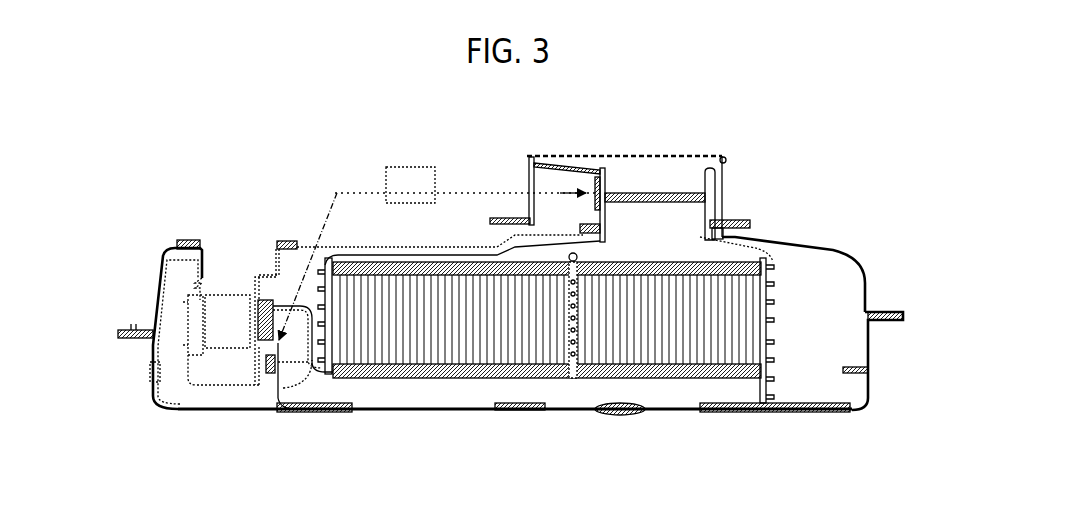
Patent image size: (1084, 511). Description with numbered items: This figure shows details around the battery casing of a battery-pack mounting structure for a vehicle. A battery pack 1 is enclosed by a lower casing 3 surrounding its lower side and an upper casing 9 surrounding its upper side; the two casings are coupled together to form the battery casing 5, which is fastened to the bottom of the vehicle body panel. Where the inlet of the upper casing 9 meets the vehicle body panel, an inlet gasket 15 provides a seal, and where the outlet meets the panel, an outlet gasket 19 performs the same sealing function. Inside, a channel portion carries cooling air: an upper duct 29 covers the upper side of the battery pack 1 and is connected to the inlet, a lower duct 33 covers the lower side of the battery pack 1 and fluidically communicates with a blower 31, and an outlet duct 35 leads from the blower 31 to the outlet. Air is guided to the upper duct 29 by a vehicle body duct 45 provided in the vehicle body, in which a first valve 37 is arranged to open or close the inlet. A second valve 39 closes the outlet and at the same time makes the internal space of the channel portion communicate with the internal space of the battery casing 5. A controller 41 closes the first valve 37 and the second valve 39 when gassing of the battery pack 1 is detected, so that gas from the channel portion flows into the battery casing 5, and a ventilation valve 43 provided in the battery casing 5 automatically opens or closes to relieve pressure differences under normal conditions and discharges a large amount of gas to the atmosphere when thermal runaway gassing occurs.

The battery pack 1 is at (447, 390).
The lower casing 3 is at (870, 358).
The battery casing 5 is at (933, 200).
The upper casing 9 is at (839, 250).
The inlet gasket 15 is at (722, 221).
The outlet gasket 19 is at (188, 241).
The upper duct 29 is at (753, 247).
The blower 31 is at (228, 307).
The lower duct 33 is at (282, 412).
The outlet duct 35 is at (190, 257).
The first valve 37 is at (689, 186).
The second valve 39 is at (270, 392).
The controller 41 is at (413, 167).
The ventilation valve 43 is at (150, 370).
The vehicle body duct 45 is at (599, 176).